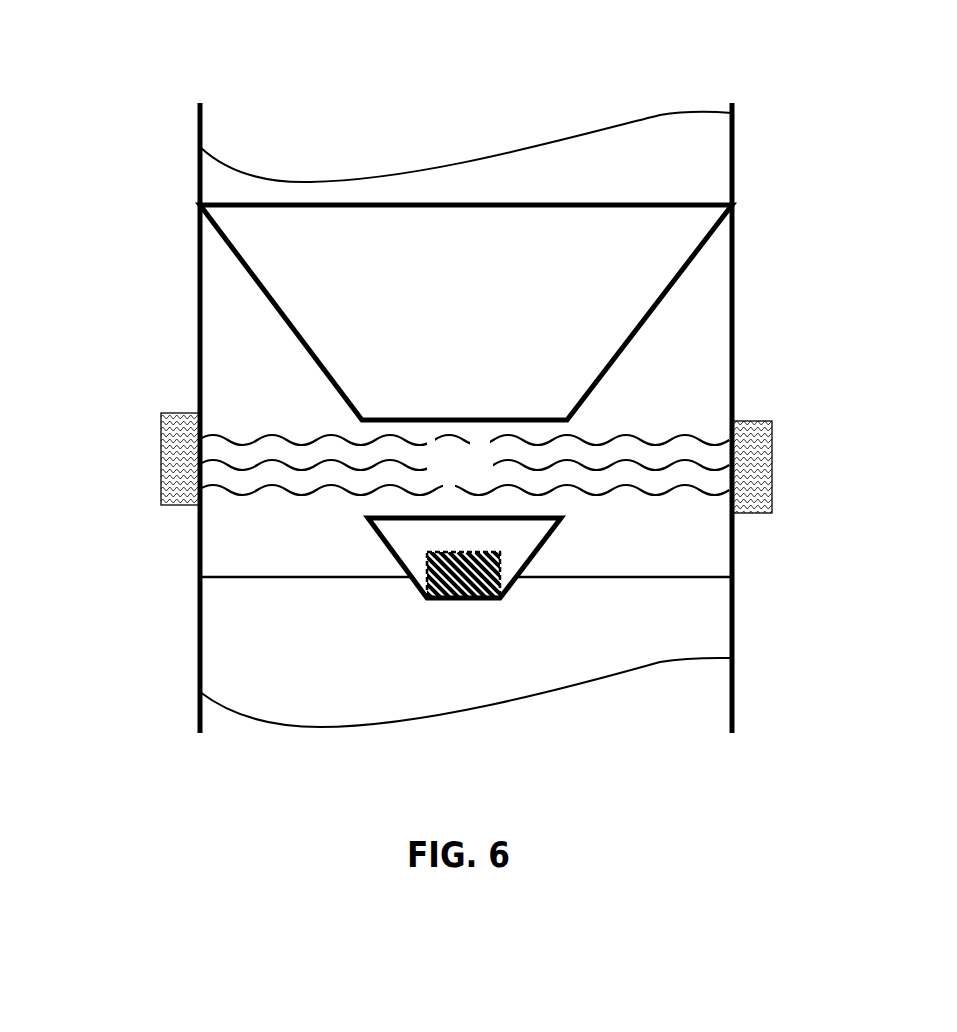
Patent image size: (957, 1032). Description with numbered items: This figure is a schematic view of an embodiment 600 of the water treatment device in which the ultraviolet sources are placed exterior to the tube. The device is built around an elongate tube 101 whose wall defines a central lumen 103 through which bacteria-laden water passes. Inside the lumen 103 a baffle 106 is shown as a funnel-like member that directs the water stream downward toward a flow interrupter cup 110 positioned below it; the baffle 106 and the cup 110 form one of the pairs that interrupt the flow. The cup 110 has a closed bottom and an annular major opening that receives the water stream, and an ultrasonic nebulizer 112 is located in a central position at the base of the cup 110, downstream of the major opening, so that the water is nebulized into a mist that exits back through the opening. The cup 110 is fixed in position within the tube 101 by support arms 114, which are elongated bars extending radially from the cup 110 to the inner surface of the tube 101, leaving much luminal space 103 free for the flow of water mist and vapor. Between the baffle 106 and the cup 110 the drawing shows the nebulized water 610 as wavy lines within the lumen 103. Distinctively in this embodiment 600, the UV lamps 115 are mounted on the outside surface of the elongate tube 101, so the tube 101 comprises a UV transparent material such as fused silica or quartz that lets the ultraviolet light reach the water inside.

The embodiment 600 is at (142, 78).
The elongate tube 101 is at (733, 310).
The central lumen 103 is at (287, 404).
The baffle 106 is at (490, 316).
The liquid 610 is at (473, 472).
The UV lamp 115 is at (160, 413).
The support arm 114 is at (309, 578).
The flow interrupter cup 110 is at (410, 588).
The ultrasonic nebulizer 112 is at (487, 590).